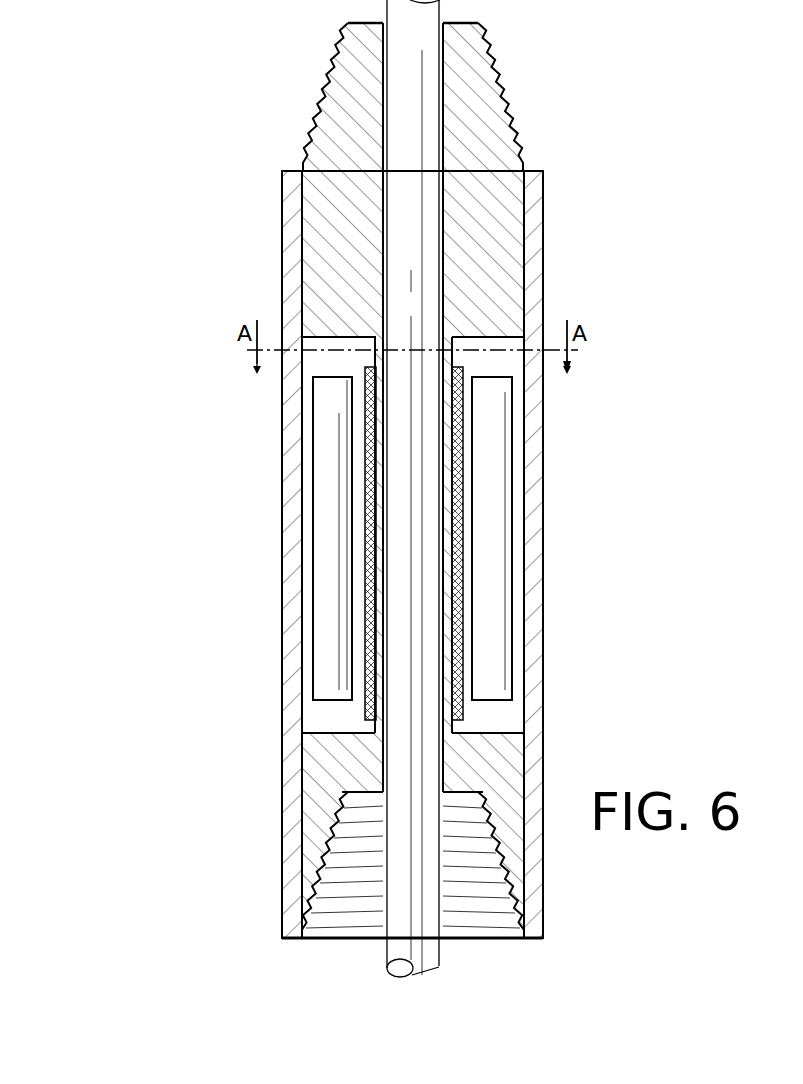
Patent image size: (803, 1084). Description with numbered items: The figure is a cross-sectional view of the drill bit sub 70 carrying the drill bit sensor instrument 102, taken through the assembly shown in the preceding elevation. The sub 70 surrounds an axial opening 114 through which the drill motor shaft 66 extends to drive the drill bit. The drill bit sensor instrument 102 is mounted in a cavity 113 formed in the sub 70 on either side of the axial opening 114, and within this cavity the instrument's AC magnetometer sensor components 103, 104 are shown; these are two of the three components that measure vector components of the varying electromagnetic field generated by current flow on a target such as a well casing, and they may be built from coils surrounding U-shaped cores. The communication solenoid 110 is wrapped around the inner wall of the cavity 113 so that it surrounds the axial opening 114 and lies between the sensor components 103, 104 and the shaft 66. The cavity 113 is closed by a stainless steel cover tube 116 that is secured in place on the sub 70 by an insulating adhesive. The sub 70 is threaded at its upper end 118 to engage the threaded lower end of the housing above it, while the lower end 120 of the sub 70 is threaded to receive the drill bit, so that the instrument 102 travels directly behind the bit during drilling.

The drill motor shaft 66 is at (420, 135).
The drill bit sub 70 is at (507, 243).
The drill bit sensor instrument 102 is at (573, 552).
The sensor component 103 is at (311, 412).
The sensor component 104 is at (512, 462).
The communication solenoid 110 is at (458, 372).
The cavity 113 is at (508, 722).
The axial opening 114 is at (383, 117).
The cover tube 116 is at (533, 620).
The upper end 118 is at (495, 86).
The lower end 120 is at (505, 880).